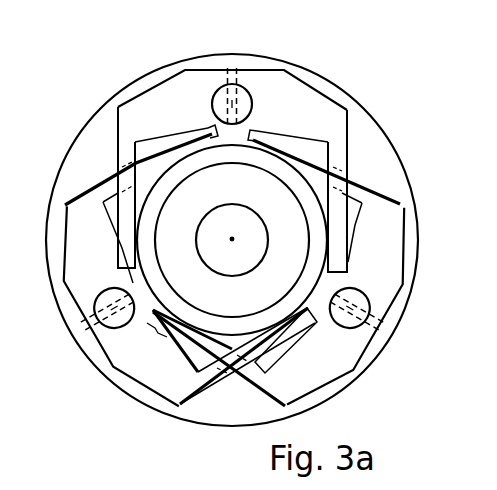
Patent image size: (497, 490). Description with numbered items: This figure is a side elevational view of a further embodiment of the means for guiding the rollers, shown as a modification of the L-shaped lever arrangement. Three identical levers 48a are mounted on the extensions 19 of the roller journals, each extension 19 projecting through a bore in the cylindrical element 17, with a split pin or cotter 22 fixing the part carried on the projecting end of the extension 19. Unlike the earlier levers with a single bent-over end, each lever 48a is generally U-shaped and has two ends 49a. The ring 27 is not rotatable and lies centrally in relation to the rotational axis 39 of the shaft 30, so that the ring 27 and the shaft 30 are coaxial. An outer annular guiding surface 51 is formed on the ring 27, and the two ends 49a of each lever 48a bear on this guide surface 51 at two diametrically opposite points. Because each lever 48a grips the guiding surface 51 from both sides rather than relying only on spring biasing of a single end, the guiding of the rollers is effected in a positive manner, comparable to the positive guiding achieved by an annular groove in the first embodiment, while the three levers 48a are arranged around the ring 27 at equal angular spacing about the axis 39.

The cylindrical element 17 is at (400, 189).
The extension 19 is at (246, 91).
The split pin 22 is at (230, 70).
The ring 27 is at (317, 234).
The shaft 30 is at (235, 203).
The rotational axis 39 is at (232, 239).
The lever 48a is at (178, 94).
The end 49a is at (128, 203).
The outer annular guiding surface 51 is at (66, 204).